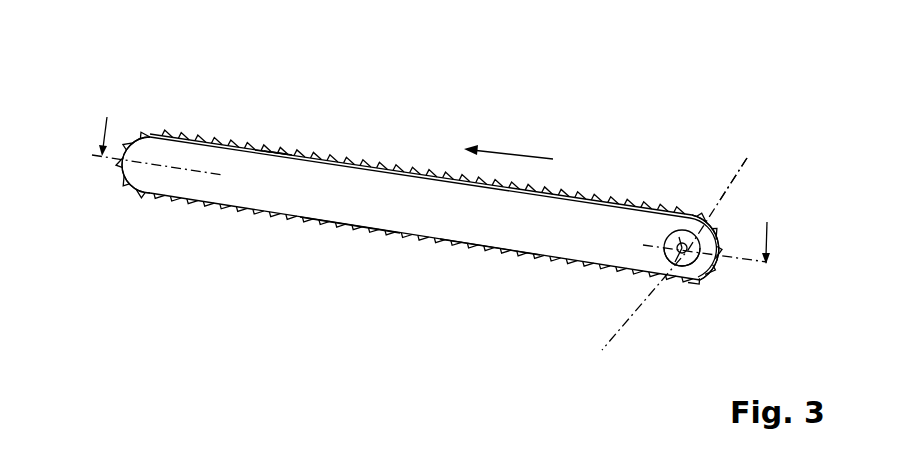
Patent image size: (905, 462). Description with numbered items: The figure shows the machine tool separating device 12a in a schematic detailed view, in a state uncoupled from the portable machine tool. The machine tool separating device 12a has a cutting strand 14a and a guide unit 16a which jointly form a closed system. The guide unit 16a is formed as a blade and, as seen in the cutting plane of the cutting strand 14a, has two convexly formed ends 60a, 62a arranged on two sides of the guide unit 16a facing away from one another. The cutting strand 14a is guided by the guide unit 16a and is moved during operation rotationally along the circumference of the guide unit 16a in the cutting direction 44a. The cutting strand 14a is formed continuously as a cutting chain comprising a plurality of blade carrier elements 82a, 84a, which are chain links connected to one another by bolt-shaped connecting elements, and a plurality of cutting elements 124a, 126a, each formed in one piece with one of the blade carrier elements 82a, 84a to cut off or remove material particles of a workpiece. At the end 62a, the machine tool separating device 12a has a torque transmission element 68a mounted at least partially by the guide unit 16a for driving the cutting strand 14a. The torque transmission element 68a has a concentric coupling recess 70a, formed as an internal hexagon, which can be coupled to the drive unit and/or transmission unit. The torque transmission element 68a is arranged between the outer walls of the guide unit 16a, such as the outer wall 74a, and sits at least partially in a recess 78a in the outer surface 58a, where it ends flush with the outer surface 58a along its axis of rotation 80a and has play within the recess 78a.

The machine tool separating device 12a is at (660, 102).
The cutting strand 14a is at (208, 138).
The guide unit 16a is at (252, 197).
The cutting direction 44a is at (517, 152).
The outer surface 58a is at (493, 228).
The convexly formed end 60a is at (124, 199).
The convexly formed end 62a is at (724, 288).
The torque transmission element 68a is at (677, 266).
The coupling recess 70a is at (679, 232).
The outer wall 74a is at (350, 203).
The recess 78a is at (702, 275).
The axis of rotation 80a is at (740, 160).
The blade carrier element 82a is at (262, 146).
The blade carrier element 84a is at (280, 148).
The cutting element 124a is at (270, 148).
The cutting element 126a is at (285, 149).